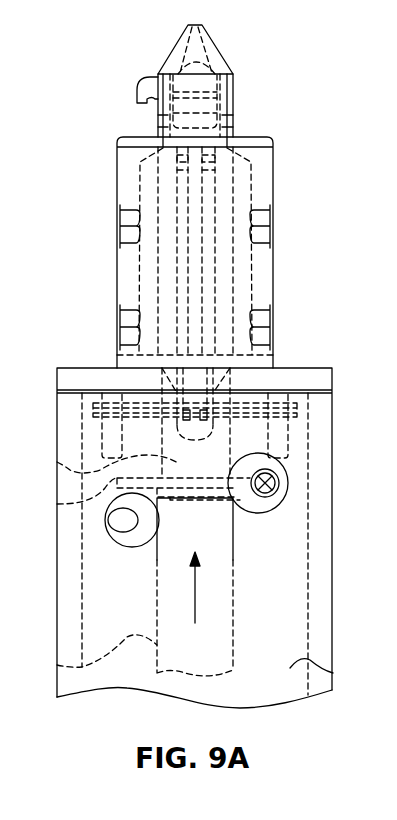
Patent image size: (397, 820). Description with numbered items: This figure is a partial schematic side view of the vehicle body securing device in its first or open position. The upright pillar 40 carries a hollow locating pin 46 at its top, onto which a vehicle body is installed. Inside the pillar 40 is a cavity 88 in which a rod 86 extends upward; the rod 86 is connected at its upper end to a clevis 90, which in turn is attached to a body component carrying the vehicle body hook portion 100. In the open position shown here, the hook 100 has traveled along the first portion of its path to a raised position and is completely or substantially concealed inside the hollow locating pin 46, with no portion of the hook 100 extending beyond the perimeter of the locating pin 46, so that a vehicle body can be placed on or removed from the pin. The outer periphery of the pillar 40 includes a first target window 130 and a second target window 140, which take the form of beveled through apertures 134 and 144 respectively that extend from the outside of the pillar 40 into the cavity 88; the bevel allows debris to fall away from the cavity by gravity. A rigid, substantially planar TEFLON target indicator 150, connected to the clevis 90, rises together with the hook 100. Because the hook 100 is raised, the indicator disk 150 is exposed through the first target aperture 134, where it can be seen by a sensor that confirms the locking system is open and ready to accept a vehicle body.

The vehicle body hook portion 100 is at (218, 107).
The locating pin 46 is at (273, 192).
The pillar 40 is at (338, 582).
The clevis 90 is at (57, 462).
The target indicator 150 is at (57, 504).
The first target window 130 is at (300, 480).
The first target aperture 134 is at (256, 512).
The second target window 140 is at (92, 529).
The second target aperture 144 is at (132, 547).
The rod 86 is at (57, 665).
The cavity 88 is at (333, 673).